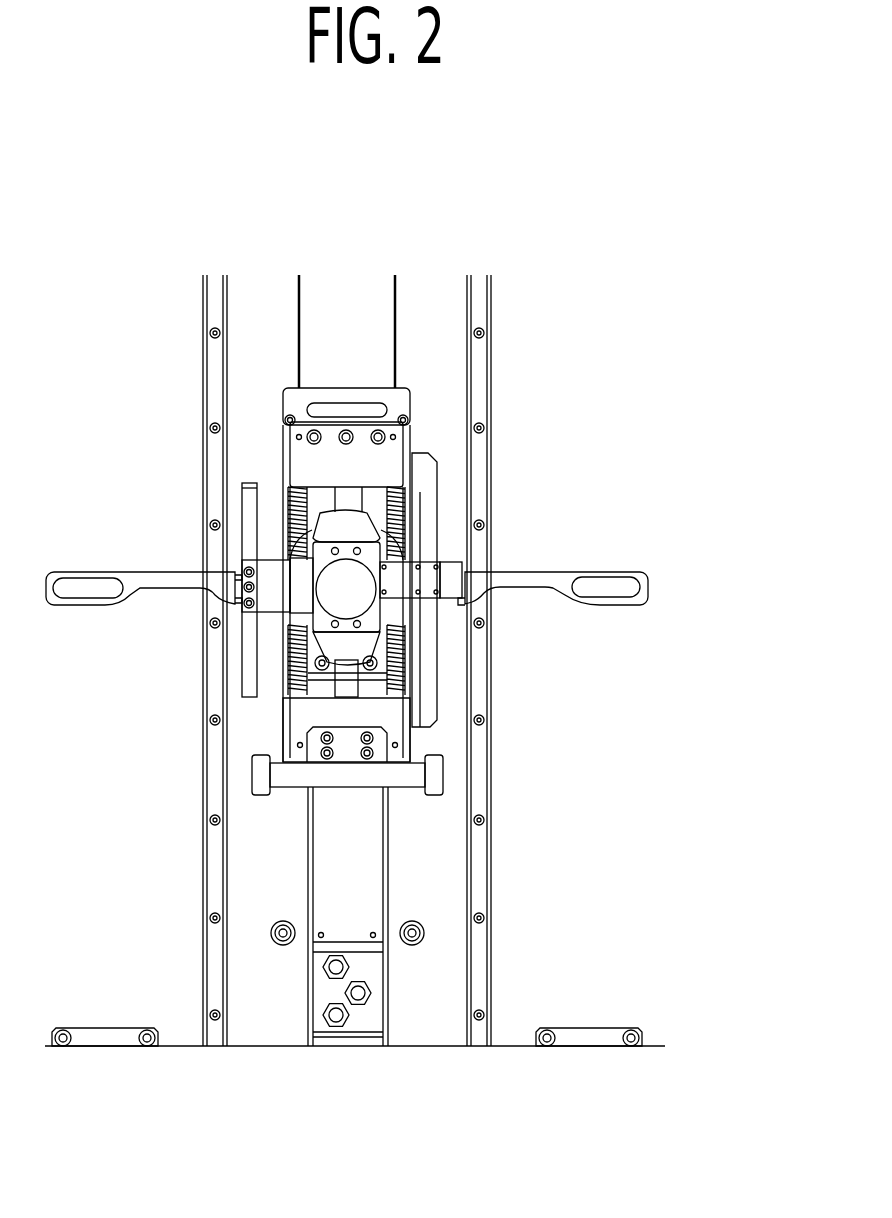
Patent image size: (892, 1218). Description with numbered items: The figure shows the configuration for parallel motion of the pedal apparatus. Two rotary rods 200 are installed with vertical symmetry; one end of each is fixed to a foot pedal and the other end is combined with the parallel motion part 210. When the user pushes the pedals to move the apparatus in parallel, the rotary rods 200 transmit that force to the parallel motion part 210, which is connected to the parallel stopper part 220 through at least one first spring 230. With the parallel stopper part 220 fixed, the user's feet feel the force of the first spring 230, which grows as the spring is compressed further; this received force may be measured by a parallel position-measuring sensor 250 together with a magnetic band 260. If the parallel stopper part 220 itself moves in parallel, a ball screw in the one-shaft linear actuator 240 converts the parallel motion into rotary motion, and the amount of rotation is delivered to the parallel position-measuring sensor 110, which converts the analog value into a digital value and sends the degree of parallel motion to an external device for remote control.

The parallel position-measuring sensor 110 is at (368, 982).
The rotary rods 200 is at (138, 582).
The parallel motion part 210 is at (300, 577).
The parallel stopper part 220 is at (360, 712).
The first spring 230 is at (385, 648).
The one-shaft linear actuator 240 is at (395, 330).
The parallel position-measuring sensor 250 is at (452, 577).
The magnetic band 260 is at (428, 505).